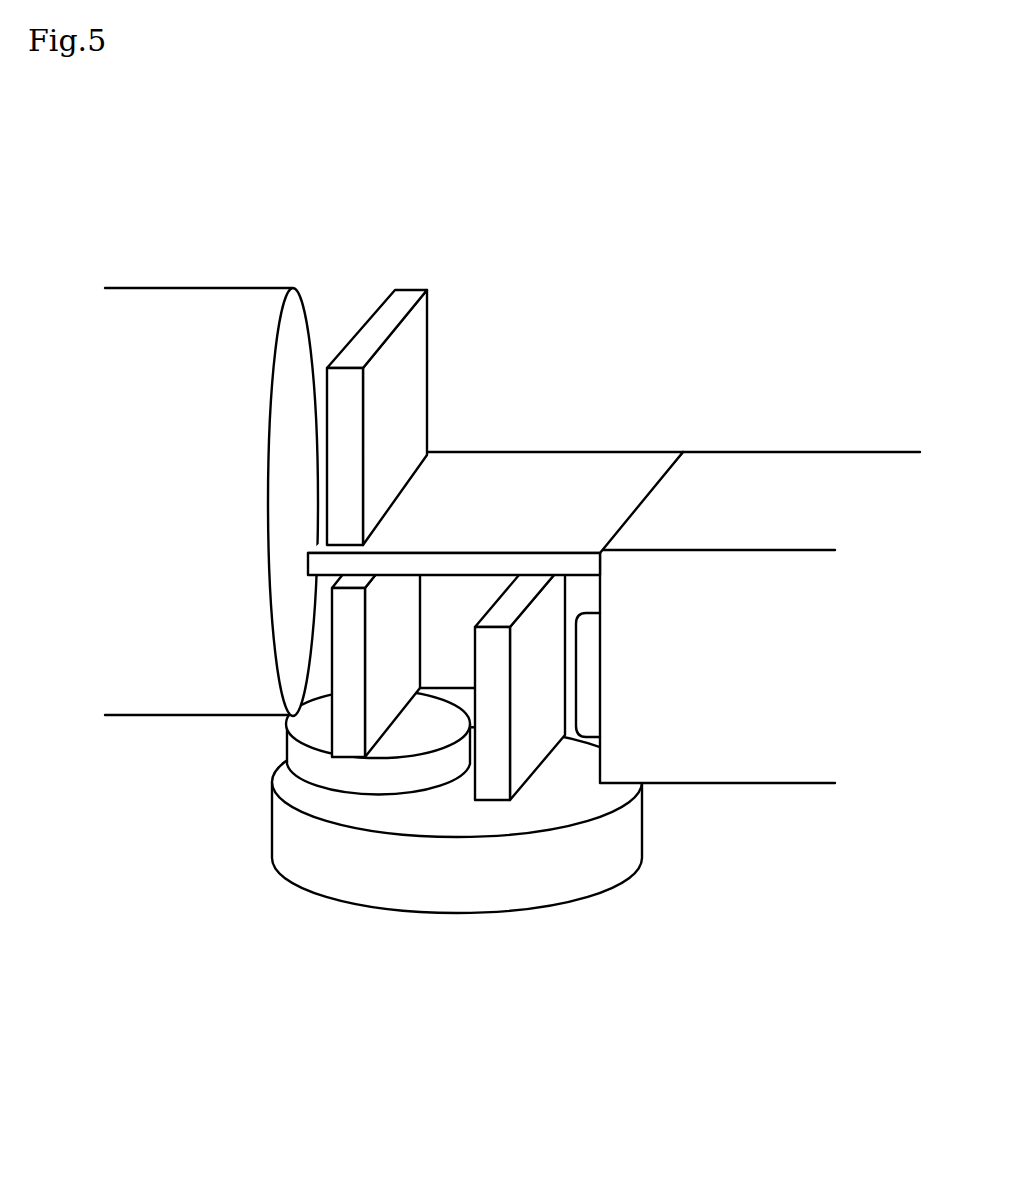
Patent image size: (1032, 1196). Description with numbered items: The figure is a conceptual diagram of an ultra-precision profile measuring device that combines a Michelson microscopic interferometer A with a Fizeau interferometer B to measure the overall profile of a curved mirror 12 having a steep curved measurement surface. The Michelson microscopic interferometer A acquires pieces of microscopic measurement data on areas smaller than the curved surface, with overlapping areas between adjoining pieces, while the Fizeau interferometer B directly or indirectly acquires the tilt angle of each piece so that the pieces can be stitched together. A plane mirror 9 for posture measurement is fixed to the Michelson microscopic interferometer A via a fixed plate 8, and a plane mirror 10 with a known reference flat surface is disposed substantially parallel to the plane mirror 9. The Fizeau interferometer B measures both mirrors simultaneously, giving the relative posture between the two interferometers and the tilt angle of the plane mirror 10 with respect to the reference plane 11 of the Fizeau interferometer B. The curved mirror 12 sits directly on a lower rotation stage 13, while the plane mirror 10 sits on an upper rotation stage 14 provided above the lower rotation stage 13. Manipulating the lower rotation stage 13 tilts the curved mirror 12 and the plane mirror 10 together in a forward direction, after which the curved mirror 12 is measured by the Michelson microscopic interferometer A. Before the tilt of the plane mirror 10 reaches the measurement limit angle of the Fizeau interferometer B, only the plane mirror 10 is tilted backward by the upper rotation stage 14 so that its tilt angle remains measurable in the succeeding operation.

The fixed plate 8 is at (575, 452).
The plane mirror for posture measurement 9 is at (438, 325).
The plane mirror 10 is at (318, 645).
The reference plane 11 is at (300, 328).
The curved mirror 12 is at (534, 768).
The lower rotation stage 13 is at (418, 902).
The upper rotation stage 14 is at (313, 779).
The Michelson microscopic interferometer A is at (802, 440).
The Fizeau interferometer B is at (190, 286).